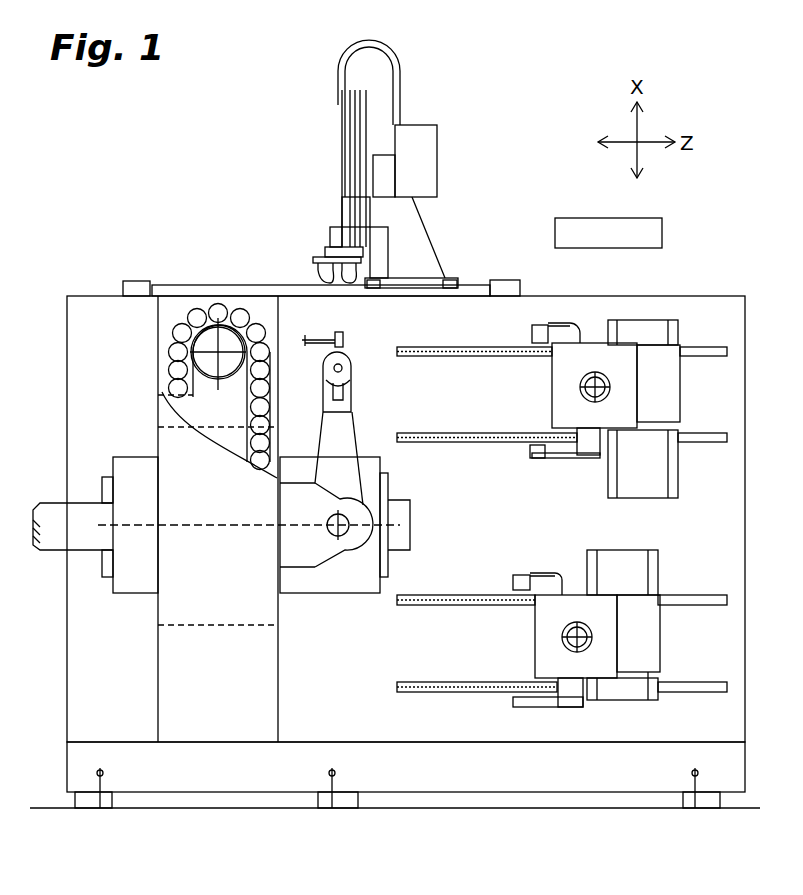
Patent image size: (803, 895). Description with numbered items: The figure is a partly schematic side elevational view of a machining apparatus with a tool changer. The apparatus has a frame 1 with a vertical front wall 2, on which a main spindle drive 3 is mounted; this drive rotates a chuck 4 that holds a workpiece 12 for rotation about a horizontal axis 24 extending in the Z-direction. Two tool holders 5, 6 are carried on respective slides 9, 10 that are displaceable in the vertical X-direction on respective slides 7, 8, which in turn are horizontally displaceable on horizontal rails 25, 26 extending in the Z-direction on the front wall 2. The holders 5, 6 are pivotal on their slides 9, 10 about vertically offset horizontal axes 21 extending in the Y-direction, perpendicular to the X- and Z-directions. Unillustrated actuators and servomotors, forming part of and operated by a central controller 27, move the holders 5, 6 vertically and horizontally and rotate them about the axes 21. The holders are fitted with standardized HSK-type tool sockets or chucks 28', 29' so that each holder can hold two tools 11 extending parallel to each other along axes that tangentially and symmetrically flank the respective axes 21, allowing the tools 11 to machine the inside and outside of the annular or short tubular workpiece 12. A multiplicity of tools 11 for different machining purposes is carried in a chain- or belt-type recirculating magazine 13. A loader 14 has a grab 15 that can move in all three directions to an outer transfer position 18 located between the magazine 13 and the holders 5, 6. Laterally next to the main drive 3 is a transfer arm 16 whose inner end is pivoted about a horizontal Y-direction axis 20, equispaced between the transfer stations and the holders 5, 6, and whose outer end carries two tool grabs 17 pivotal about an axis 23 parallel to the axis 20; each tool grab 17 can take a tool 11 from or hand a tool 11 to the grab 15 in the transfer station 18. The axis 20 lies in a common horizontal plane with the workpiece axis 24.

The frame 1 is at (88, 340).
The vertical front wall 2 is at (205, 727).
The main spindle drive 3 is at (316, 585).
The chuck 4 is at (388, 566).
The tool holder 5 is at (548, 389).
The tool holder 6 is at (545, 638).
The slide 7 is at (652, 468).
The slide 8 is at (640, 576).
The slide 9 is at (662, 394).
The slide 10 is at (650, 641).
The tool 11 is at (195, 297).
The workpiece 12 is at (400, 504).
The recirculating magazine 13 is at (222, 250).
The loader 14 is at (338, 160).
The grab 15 is at (318, 284).
The transfer arm 16 is at (345, 440).
The tool grab 17 is at (345, 348).
The outer transfer position 18 is at (338, 325).
The horizontal Y-direction axis 20 is at (328, 519).
The horizontal axis 21 is at (600, 381).
The axis 23 is at (350, 360).
The horizontal axis 24 is at (225, 525).
The horizontal rail 25 is at (470, 432).
The horizontal rail 26 is at (470, 606).
The central controller 27 is at (567, 220).
The tool socket 28' is at (569, 321).
The tool socket 29' is at (537, 564).